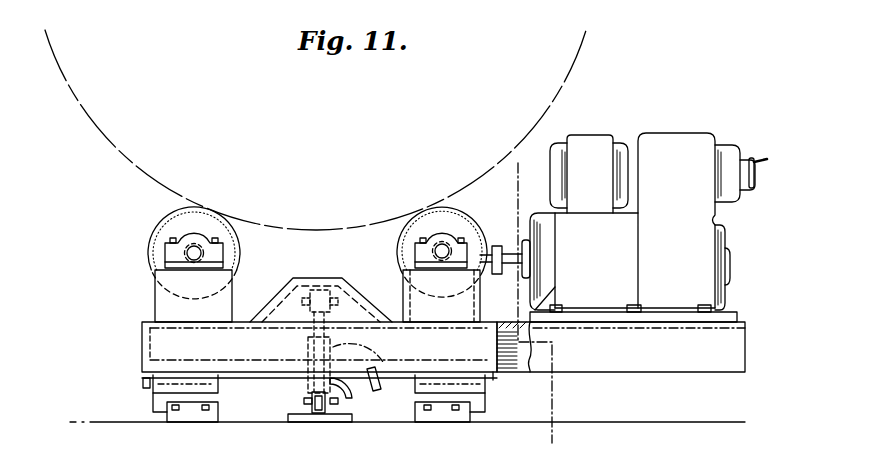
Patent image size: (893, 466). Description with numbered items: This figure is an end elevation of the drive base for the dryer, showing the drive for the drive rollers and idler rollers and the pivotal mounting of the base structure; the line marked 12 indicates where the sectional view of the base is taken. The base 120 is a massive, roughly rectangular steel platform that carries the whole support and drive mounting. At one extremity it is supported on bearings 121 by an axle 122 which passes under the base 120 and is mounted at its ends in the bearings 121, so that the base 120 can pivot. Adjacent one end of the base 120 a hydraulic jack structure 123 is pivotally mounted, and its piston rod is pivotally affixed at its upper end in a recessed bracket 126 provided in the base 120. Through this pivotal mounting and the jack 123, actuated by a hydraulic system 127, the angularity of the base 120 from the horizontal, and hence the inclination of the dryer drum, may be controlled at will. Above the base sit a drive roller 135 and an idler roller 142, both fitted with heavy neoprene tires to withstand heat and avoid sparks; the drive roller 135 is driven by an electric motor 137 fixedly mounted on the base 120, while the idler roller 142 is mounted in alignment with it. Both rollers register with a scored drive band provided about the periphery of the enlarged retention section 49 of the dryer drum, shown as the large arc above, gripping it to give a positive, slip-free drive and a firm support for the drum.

The enlarged retention section 49 is at (112, 140).
The base 120 is at (249, 349).
The bearings 121 is at (175, 388).
The axle 122 is at (472, 403).
The hydraulic jack structure 123 is at (312, 340).
The recessed bracket 126 is at (359, 292).
The hydraulic system 127 is at (372, 355).
The drive roller 135 is at (458, 213).
The electric motor 137 is at (600, 143).
The idler roller 142 is at (238, 245).
The section line 12- 12 is at (518, 163).